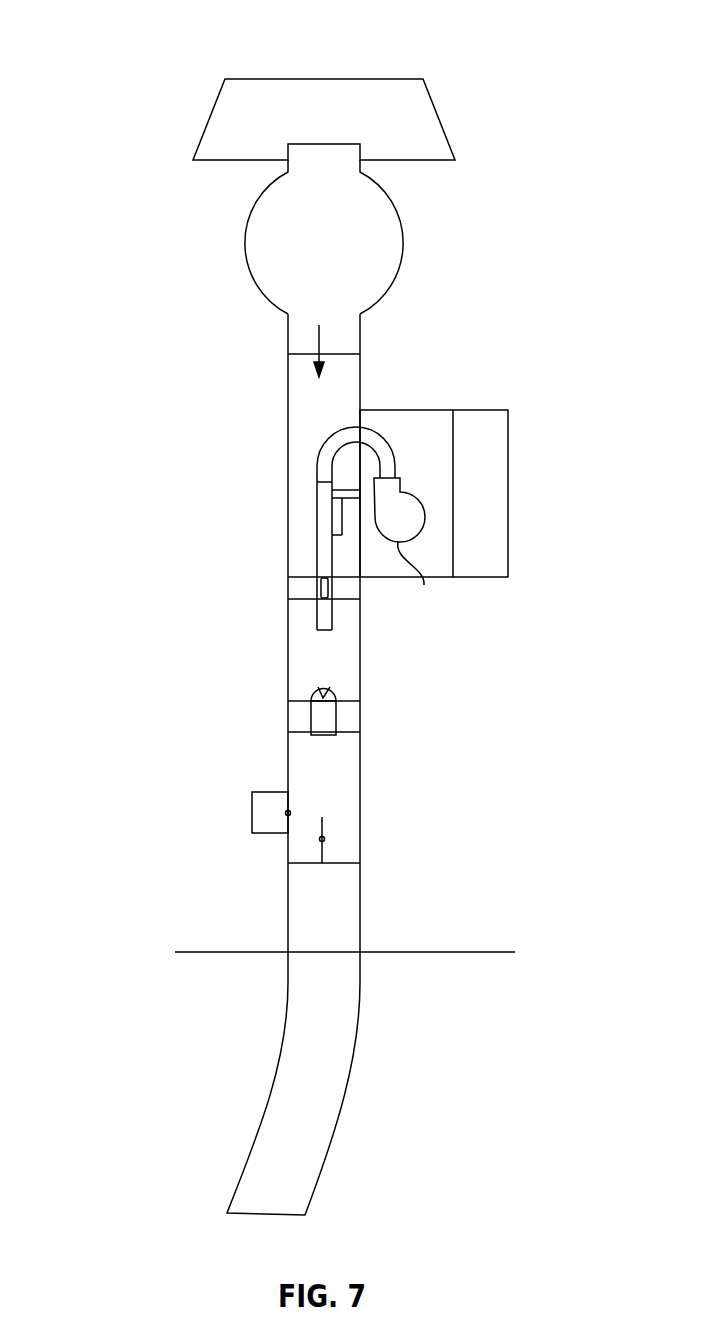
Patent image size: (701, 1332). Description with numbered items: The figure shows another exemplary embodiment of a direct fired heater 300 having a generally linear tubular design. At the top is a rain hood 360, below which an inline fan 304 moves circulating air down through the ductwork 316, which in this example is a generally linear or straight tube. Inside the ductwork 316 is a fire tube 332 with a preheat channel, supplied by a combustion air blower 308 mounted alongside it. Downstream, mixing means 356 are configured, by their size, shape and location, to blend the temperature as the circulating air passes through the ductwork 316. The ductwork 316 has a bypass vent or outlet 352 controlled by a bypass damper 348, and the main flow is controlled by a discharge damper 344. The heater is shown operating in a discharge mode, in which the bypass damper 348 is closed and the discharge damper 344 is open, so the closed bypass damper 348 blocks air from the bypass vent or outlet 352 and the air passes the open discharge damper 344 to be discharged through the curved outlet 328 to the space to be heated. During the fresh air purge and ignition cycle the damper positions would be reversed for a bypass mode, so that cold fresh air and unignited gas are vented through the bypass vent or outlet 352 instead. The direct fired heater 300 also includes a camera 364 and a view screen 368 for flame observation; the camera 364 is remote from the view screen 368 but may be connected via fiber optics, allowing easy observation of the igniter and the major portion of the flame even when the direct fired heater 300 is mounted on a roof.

The direct fired heater 300 is at (126, 37).
The rain hood 360 is at (437, 111).
The inline fan 304 is at (420, 244).
The ductwork 316 is at (302, 647).
The view screen 368 is at (508, 492).
The fire tube 332 is at (315, 525).
The combustion air blower 308 is at (411, 549).
The camera 364 is at (360, 677).
The mixing means 356 is at (323, 735).
The bypass vent or outlet 352 is at (250, 813).
The bypass damper 348 is at (295, 818).
The discharge damper 344 is at (323, 828).
The outlet 328 is at (267, 1217).